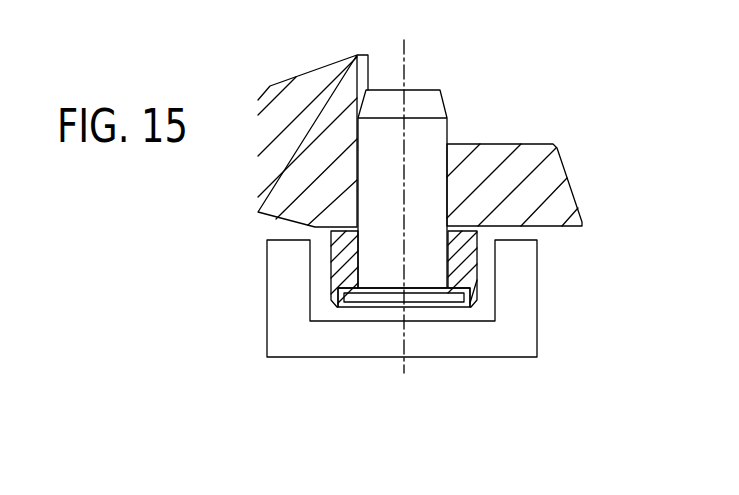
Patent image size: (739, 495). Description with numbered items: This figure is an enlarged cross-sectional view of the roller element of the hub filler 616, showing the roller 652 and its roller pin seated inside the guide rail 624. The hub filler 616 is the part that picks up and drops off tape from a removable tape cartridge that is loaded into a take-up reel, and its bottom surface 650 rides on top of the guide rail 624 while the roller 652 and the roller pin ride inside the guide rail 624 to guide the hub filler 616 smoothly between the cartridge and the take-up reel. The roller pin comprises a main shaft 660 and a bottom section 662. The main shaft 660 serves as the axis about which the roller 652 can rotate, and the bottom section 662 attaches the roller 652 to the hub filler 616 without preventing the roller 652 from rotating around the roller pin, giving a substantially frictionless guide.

The hub filler 616 is at (562, 112).
The bottom surface 650 is at (560, 227).
The roller 652 is at (472, 273).
The main shaft 660 is at (385, 263).
The bottom section 662 is at (453, 298).
The guide rail 624 is at (278, 318).